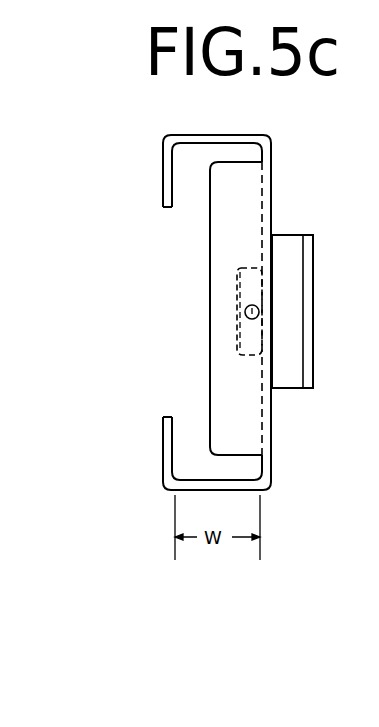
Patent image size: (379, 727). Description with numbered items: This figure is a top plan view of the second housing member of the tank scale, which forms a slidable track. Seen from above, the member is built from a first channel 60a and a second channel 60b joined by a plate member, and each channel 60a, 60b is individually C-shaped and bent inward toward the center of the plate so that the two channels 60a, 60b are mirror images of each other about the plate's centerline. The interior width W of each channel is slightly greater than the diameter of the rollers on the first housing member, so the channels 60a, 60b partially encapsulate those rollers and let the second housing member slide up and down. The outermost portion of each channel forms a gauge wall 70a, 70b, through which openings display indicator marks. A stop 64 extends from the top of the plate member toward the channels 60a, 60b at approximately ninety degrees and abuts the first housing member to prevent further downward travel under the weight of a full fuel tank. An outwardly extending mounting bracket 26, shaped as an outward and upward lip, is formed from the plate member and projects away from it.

The mounting bracket 26 is at (311, 358).
The stop 64 is at (210, 247).
The first channel 60a is at (193, 455).
The second channel 60b is at (212, 157).
The gauge wall 70a is at (237, 492).
The gauge wall 70b is at (207, 138).